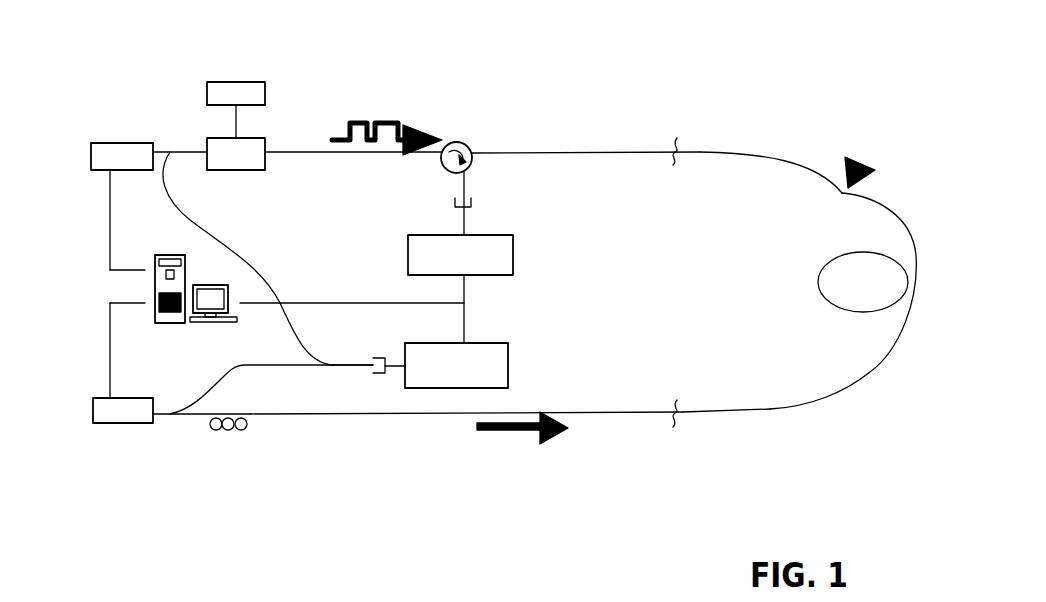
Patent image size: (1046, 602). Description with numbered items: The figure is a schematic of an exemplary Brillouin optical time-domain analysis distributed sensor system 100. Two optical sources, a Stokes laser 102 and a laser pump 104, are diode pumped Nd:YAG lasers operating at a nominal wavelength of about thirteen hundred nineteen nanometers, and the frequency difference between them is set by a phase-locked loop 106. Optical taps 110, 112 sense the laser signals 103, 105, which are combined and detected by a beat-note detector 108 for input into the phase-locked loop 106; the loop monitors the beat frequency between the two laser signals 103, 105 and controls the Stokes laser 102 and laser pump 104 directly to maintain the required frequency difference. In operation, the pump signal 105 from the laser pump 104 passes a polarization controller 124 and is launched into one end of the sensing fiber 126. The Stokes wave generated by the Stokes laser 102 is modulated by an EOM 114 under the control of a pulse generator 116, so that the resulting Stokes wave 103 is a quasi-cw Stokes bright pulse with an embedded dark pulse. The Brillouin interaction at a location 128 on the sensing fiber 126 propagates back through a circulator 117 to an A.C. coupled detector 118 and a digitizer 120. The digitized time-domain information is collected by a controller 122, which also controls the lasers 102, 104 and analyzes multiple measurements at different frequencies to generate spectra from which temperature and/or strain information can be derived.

The BOTDA distributed sensor system 100 is at (285, 560).
The Stokes laser 102 is at (105, 120).
The Stokes wave 103 is at (405, 116).
The laser pump 104 is at (103, 430).
The pump signal 105 is at (515, 438).
The phase-locked loop 106 is at (502, 340).
The detector 108 is at (370, 396).
The optical tap 110 is at (170, 143).
The optical tap 112 is at (168, 418).
The EOM 114 is at (206, 138).
The pulse generator 116 is at (240, 82).
The circulator 117 is at (462, 138).
The detector 118 is at (471, 207).
The digitizer 120 is at (513, 252).
The controller 122 is at (168, 325).
The polarization controller 124 is at (253, 423).
The sensing fiber 126 is at (770, 410).
The location on the sense fiber 128 is at (838, 197).